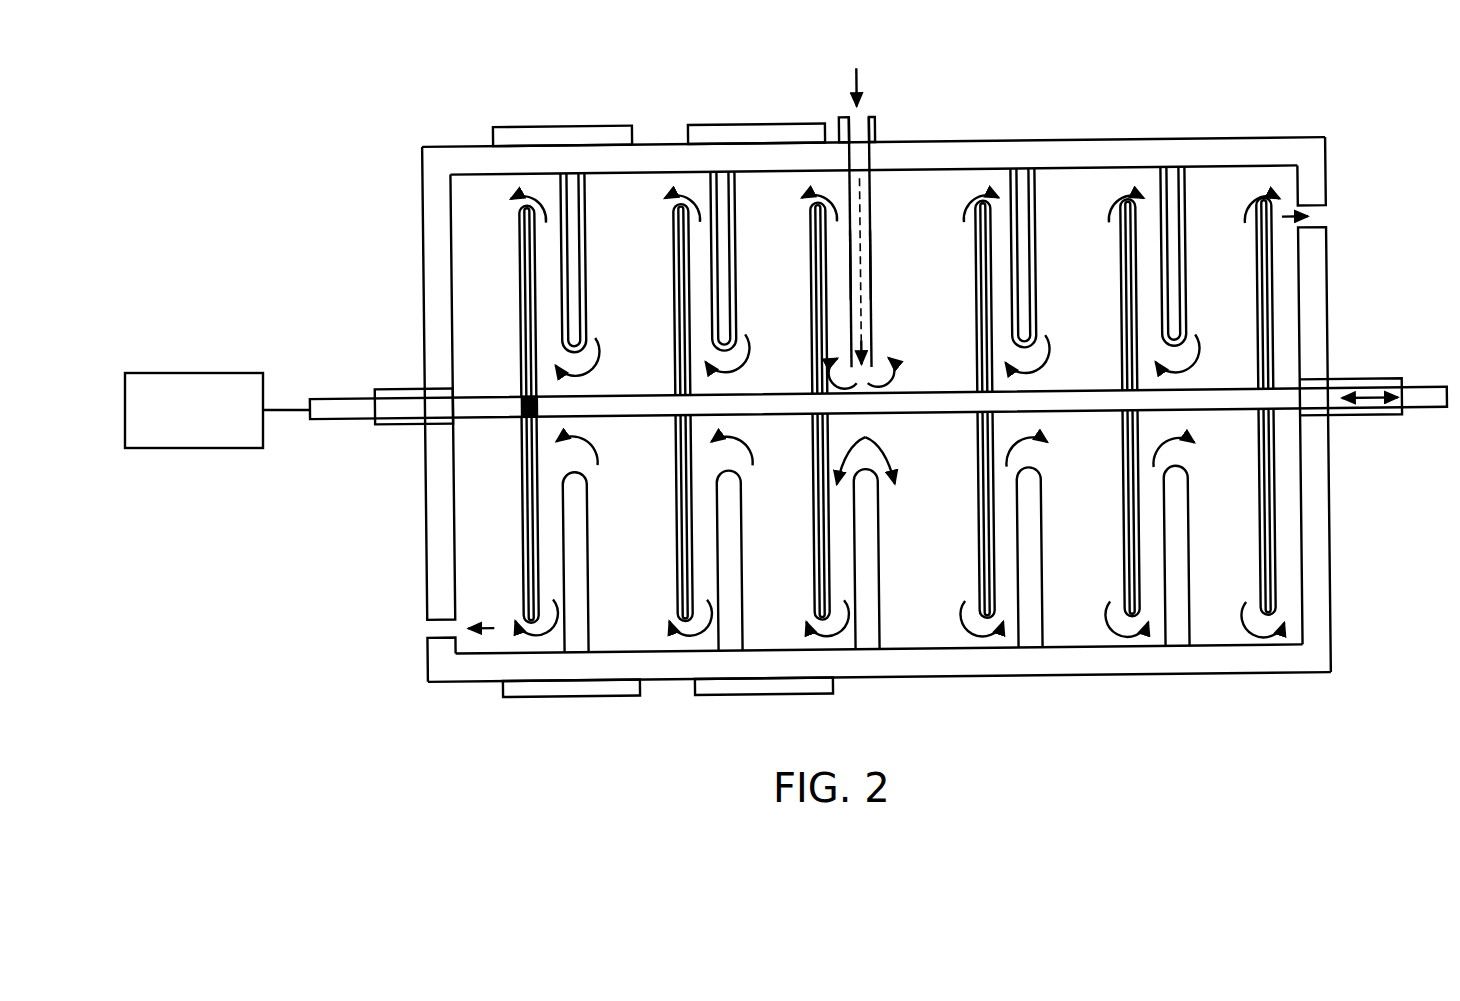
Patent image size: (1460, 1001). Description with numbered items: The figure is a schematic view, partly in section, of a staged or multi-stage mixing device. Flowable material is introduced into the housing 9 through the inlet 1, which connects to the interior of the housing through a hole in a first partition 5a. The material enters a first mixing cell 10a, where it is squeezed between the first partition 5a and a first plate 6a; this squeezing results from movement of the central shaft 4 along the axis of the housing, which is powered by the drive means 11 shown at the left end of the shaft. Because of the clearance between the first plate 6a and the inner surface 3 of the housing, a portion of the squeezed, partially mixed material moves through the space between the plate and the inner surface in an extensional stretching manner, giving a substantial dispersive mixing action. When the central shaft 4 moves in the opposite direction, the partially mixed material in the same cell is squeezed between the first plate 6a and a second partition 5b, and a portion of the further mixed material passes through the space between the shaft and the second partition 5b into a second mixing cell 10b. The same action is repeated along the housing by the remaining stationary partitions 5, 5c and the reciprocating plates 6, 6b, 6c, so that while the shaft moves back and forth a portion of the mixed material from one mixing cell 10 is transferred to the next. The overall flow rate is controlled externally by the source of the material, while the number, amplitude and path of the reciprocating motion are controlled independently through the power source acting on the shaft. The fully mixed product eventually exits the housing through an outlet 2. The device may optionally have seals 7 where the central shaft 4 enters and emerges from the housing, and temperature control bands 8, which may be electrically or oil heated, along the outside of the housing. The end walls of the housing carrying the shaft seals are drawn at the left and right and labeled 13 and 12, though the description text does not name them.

The inlet 1 is at (868, 108).
The outlet 2 is at (430, 627).
The inner surface of the housing 3 is at (1060, 173).
The central shaft 4 is at (1428, 390).
The partition 5 is at (1187, 197).
The first partition 5a is at (872, 232).
The second partition 5b is at (738, 200).
The partition 5c is at (561, 300).
The plate 6 is at (1125, 553).
The first plate 6a is at (815, 532).
The plate 6b is at (678, 535).
The plate 6c is at (528, 545).
The seals 7 is at (878, 132).
The temperature control bands 8 is at (693, 128).
The housing 9 is at (1012, 142).
The mixing cell 10 is at (1208, 580).
The first mixing cell 10a is at (755, 630).
The second mixing cell 10b is at (620, 622).
The drive means 11 is at (180, 373).
The right end wall 12 is at (1298, 510).
The left end wall 13 is at (458, 510).